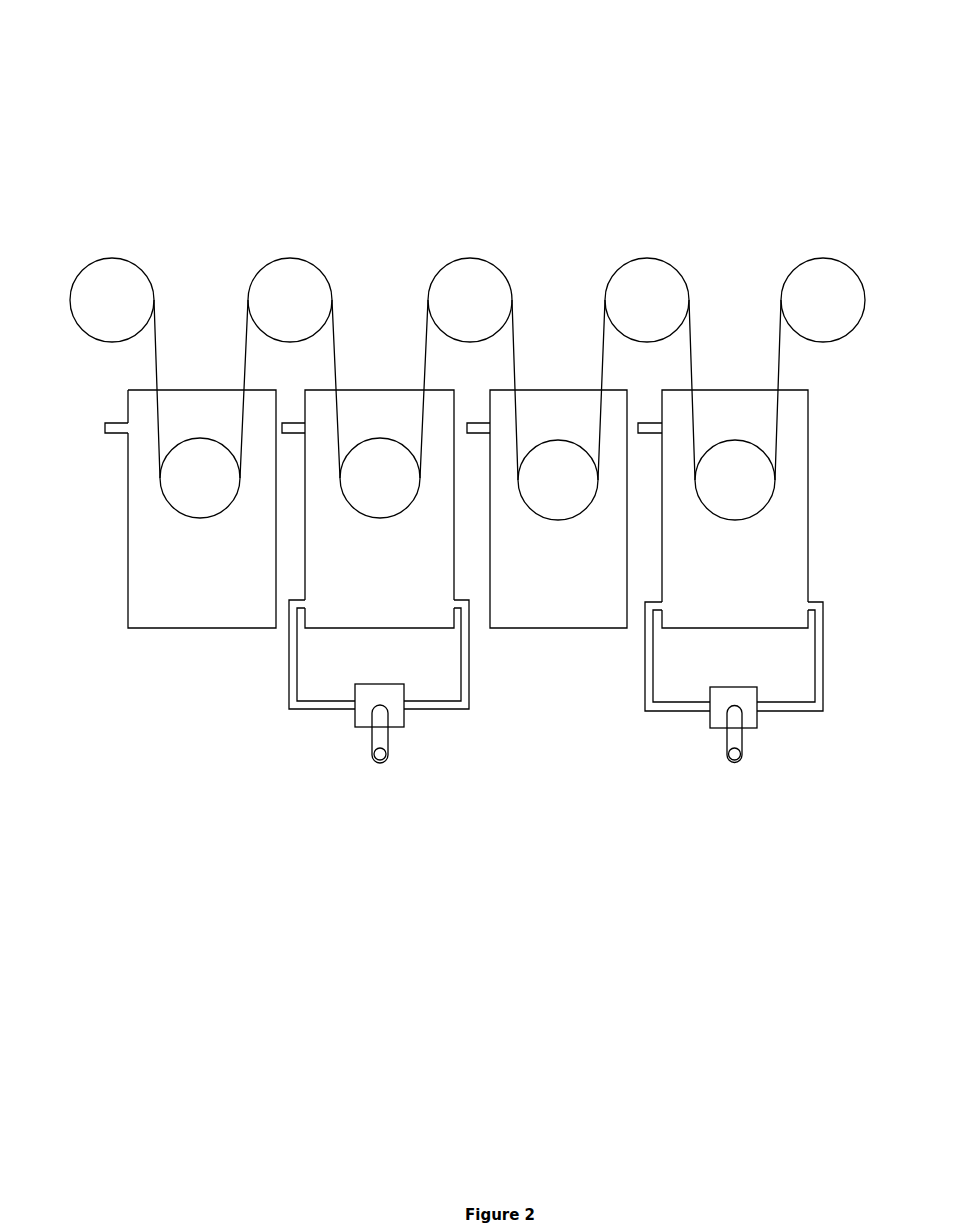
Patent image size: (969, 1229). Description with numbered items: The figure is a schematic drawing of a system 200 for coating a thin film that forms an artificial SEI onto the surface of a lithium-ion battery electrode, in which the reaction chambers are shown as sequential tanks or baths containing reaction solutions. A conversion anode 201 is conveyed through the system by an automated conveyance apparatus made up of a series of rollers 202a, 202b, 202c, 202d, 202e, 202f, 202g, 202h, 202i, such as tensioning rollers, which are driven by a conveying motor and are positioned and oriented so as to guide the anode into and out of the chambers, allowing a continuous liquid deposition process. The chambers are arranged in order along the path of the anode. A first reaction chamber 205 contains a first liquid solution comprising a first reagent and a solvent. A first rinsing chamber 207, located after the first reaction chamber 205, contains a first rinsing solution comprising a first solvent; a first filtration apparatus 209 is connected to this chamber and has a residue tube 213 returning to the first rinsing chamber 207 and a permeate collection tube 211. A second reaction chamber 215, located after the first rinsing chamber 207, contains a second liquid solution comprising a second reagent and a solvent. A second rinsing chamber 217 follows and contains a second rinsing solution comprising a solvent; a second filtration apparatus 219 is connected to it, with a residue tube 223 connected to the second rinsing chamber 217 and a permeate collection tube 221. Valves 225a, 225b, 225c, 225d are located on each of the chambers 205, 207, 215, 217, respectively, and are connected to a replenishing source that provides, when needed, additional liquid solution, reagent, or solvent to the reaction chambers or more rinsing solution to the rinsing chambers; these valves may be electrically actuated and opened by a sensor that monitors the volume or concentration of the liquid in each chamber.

The system 200 is at (470, 70).
The conversion anode 201 is at (118, 259).
The roller 202a is at (76, 324).
The roller 202b is at (192, 508).
The roller 202c is at (312, 286).
The roller 202d is at (369, 508).
The roller 202e is at (489, 284).
The roller 202f is at (546, 507).
The roller 202g is at (660, 272).
The roller 202h is at (722, 507).
The roller 202i is at (850, 284).
The first reaction chamber 205 is at (126, 596).
The first rinsing chamber 207 is at (358, 390).
The first filtration apparatus 209 is at (370, 684).
The permeate collection tube 211 is at (381, 766).
The residue tube 213 is at (286, 678).
The second reaction chamber 215 is at (540, 388).
The second rinsing chamber 217 is at (713, 390).
The second filtration apparatus 219 is at (726, 687).
The permeate collection tube 221 is at (735, 766).
The residue tube 223 is at (646, 696).
The valve 225a is at (100, 425).
The valve 225b is at (292, 416).
The valve 225c is at (478, 416).
The valve 225d is at (650, 416).